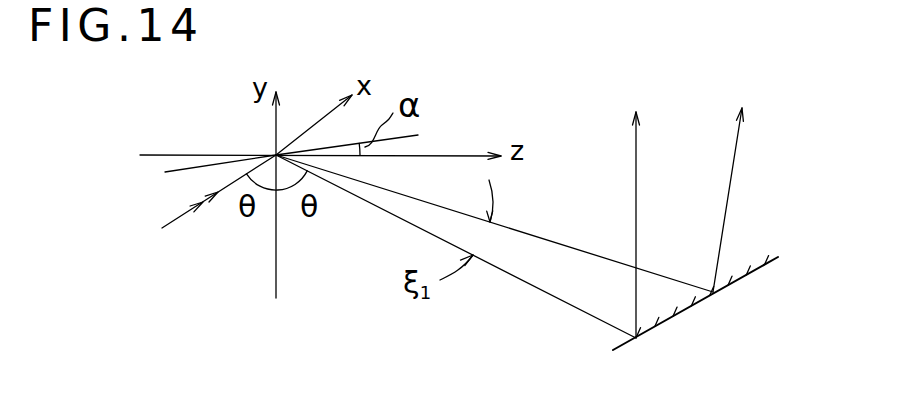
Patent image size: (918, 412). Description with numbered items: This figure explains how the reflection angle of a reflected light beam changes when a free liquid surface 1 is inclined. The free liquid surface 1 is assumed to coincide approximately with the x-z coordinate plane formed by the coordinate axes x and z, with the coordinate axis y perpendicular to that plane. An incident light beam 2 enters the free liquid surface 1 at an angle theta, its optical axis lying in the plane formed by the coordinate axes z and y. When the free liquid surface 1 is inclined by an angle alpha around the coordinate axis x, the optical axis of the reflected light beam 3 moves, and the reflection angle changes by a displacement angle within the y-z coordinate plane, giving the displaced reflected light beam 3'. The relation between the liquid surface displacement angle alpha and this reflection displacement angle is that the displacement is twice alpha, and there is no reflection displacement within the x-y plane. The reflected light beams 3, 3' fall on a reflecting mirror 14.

The free liquid surface 1 is at (165, 172).
The incident light beam 2 is at (178, 218).
The reflected light beam 3 is at (456, 246).
The reflected light beam 3' is at (494, 223).
The reflecting mirror 14 is at (620, 343).